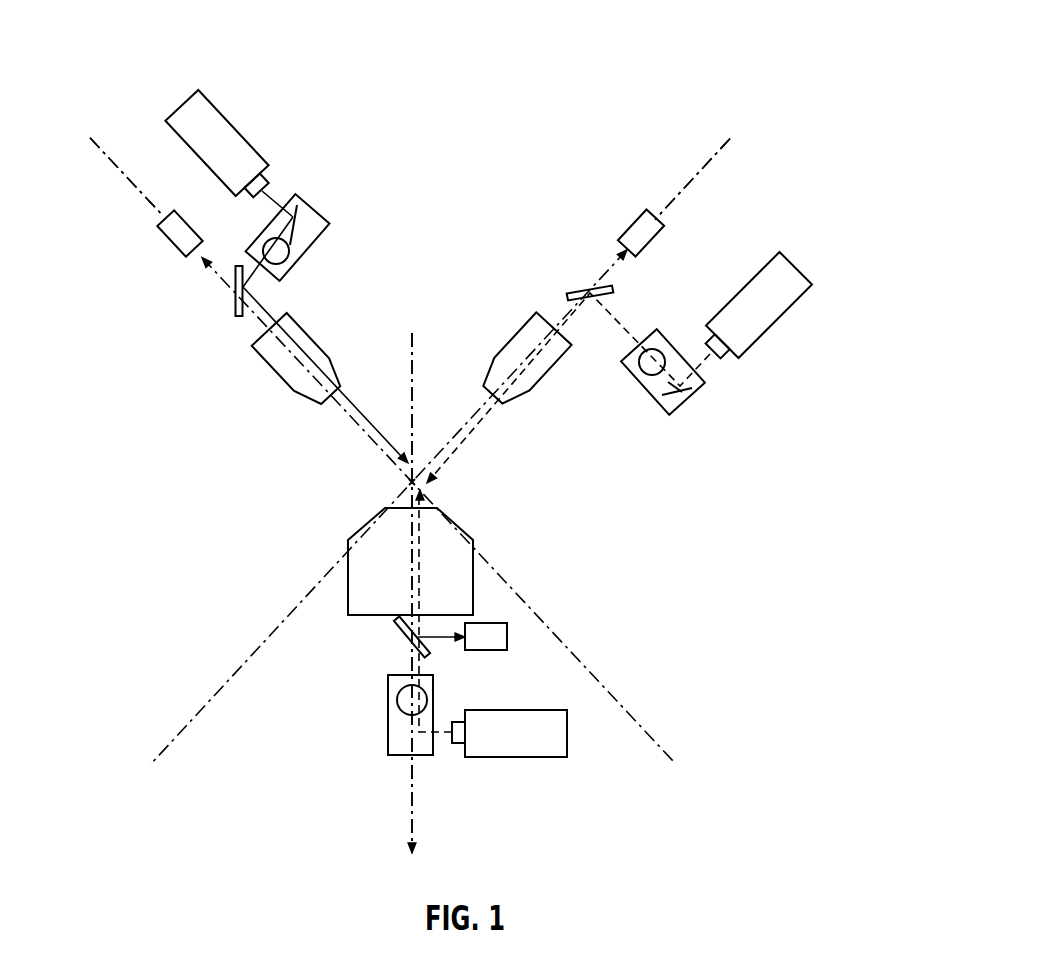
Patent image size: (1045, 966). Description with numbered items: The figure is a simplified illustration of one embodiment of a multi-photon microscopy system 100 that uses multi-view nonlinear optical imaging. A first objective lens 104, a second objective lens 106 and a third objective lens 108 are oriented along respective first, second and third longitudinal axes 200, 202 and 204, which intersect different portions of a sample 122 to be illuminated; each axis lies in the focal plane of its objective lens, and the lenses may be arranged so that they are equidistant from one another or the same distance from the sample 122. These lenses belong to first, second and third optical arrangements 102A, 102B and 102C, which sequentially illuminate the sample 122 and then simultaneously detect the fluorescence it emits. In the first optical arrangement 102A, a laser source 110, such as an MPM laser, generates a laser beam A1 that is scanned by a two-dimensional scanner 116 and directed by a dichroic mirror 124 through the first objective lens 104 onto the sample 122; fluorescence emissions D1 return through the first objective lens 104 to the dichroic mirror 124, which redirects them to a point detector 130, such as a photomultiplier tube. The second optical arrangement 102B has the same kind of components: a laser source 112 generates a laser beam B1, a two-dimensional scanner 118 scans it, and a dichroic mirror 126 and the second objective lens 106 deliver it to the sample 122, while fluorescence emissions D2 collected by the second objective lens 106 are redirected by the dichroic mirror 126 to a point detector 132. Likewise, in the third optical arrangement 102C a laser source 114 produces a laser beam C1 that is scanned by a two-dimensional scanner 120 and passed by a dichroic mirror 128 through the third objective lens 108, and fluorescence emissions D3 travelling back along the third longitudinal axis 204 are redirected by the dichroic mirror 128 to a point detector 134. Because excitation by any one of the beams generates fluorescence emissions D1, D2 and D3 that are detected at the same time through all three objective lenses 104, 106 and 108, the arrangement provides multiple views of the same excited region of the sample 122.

The multi-photon microscopy system 100 is at (795, 52).
The first optical arrangement 102A is at (568, 670).
The second optical arrangement 102B is at (418, 132).
The third optical arrangement 102C is at (795, 494).
The first objective lens 104 is at (348, 565).
The second objective lens 106 is at (272, 375).
The third objective lens 108 is at (552, 375).
The laser source 110 is at (517, 757).
The laser source 112 is at (220, 106).
The laser source 114 is at (775, 320).
The two-dimensional scanner 116 is at (388, 717).
The two-dimensional scanner 118 is at (313, 208).
The two-dimensional scanner 120 is at (689, 401).
The sample 122 is at (440, 478).
The dichroic mirror 124 is at (397, 630).
The dichroic mirror 126 is at (235, 307).
The dichroic mirror 128 is at (563, 295).
The point detector 130 is at (507, 637).
The point detector 132 is at (172, 245).
The point detector 134 is at (632, 222).
The first longitudinal axis 200 is at (407, 842).
The second longitudinal axis 202 is at (110, 160).
The third longitudinal axis 204 is at (713, 157).
The laser beam A1 is at (435, 732).
The laser beam B1 is at (262, 300).
The laser beam C1 is at (612, 313).
The fluorescence emissions D1 is at (410, 790).
The fluorescence emissions D2 is at (138, 190).
The fluorescence emissions D3 is at (698, 172).